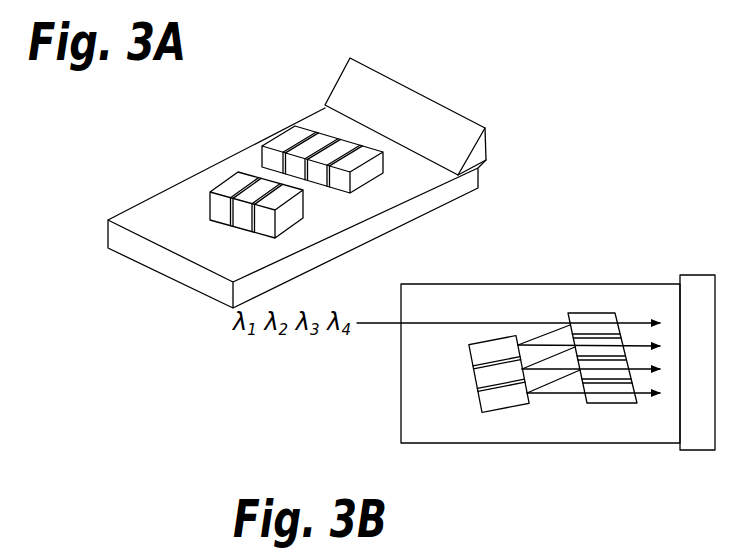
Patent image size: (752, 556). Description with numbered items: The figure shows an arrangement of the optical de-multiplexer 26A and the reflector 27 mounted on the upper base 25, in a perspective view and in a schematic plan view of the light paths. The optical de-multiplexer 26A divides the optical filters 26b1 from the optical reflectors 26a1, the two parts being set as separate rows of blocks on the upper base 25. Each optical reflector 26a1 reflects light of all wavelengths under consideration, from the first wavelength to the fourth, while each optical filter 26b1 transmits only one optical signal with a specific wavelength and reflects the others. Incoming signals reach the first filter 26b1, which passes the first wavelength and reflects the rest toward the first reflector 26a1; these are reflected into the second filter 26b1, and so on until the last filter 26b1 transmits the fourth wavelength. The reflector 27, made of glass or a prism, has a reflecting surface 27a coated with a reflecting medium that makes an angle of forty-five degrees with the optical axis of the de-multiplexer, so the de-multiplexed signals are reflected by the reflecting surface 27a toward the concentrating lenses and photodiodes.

In FIG. 3A, the upper base 25 is at (213, 285).
In FIG. 3B, the upper base 25 is at (402, 410).
In FIG. 3A, the optical de-multiplexer 26A is at (304, 210).
In FIG. 3B, the optical de-multiplexer 26A is at (551, 365).
In FIG. 3A, the optical reflector 26a1 is at (287, 222).
In FIG. 3B, the optical reflector 26a1 is at (505, 403).
In FIG. 3A, the optical filter 26b1 is at (367, 173).
In FIG. 3B, the optical filter 26b1 is at (603, 400).
In FIG. 3A, the reflector 27 is at (450, 116).
In FIG. 3B, the reflector 27 is at (698, 441).
In FIG. 3A, the reflecting surface 27a is at (453, 143).